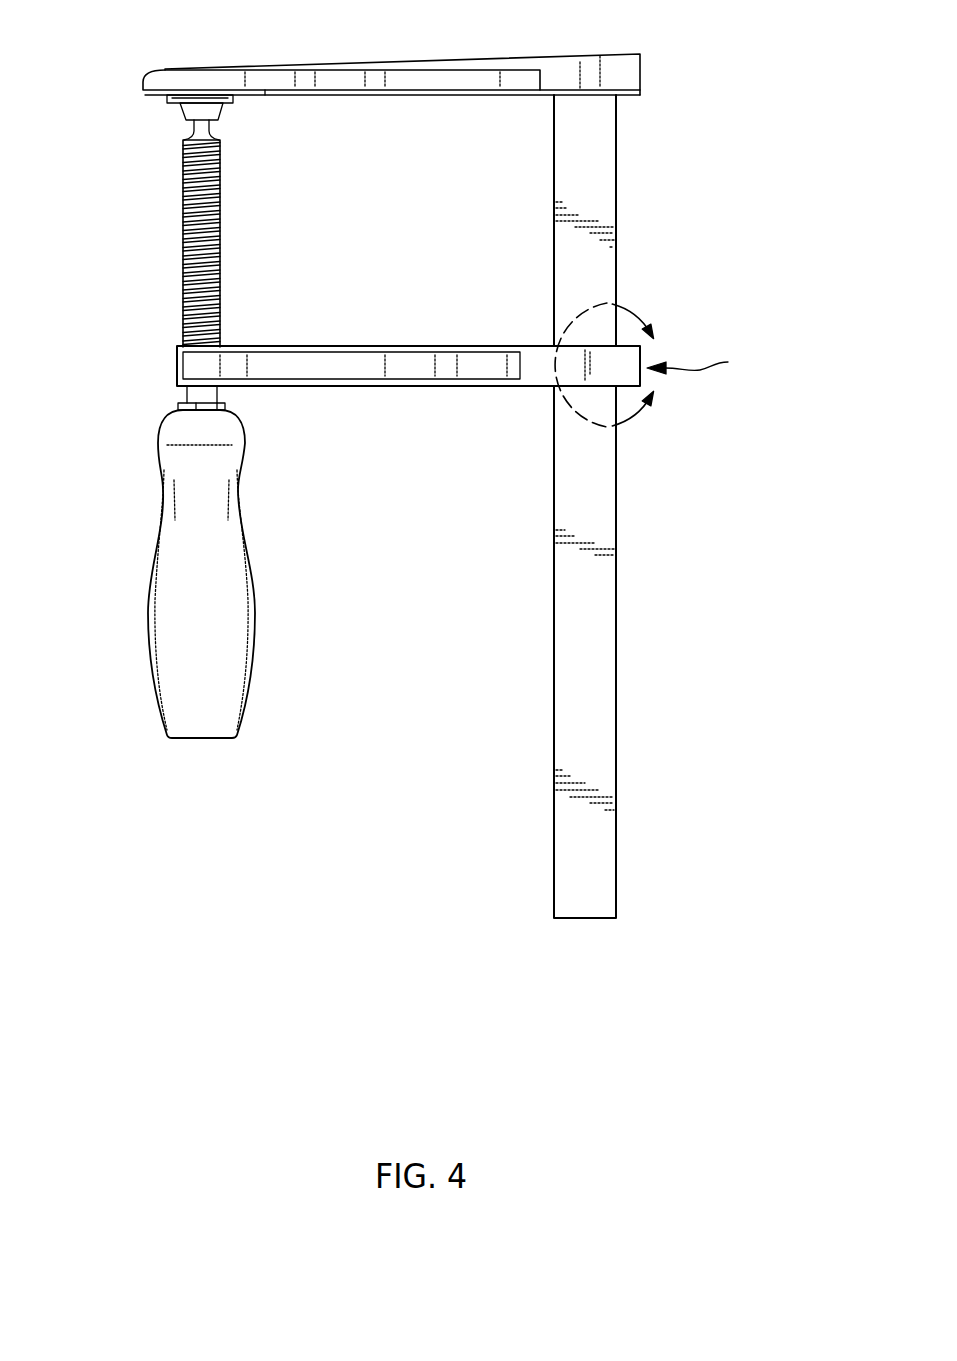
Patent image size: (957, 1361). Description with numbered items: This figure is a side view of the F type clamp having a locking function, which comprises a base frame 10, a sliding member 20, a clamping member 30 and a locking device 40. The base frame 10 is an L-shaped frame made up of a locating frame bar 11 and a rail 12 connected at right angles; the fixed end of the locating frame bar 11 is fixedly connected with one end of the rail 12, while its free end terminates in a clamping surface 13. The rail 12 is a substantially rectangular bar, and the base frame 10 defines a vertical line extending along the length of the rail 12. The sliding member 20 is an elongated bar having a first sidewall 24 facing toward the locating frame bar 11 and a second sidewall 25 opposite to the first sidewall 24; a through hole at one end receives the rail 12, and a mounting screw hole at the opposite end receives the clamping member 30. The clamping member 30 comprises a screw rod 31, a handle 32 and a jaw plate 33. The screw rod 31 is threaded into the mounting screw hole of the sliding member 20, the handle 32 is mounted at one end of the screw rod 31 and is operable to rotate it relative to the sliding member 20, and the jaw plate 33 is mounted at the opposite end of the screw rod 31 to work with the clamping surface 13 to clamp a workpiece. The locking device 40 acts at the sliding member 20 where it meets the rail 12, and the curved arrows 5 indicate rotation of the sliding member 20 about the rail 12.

The base frame 10 is at (723, 0).
The locating frame bar 11 is at (622, 55).
The rail 12 is at (590, 103).
The clamping surface 13 is at (155, 93).
The sliding member 20 is at (394, 386).
The first sidewall 24 is at (467, 346).
The second sidewall 25 is at (475, 386).
The clamping member 30 is at (88, 167).
The screw rod 31 is at (183, 240).
The handle 32 is at (178, 423).
The jaw plate 33 is at (182, 112).
The locking device 40 is at (705, 358).
The rotation direction 5 is at (604, 366).